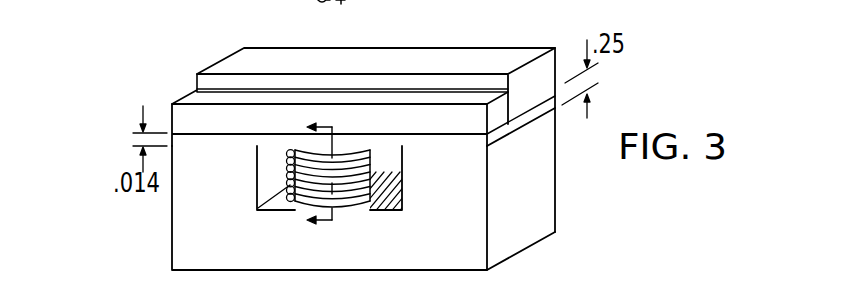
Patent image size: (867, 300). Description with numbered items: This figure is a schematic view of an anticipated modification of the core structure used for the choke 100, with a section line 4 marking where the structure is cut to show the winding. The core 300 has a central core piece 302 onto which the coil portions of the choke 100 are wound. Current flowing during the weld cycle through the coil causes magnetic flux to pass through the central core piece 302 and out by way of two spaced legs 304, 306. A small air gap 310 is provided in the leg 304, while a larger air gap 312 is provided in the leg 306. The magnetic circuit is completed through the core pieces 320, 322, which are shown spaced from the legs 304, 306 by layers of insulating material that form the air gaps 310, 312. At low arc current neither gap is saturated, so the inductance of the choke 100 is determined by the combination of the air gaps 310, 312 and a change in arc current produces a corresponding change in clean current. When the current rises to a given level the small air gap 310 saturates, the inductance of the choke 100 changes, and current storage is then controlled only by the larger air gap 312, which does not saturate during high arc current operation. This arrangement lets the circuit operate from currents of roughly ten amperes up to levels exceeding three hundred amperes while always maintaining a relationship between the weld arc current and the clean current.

The choke 100 is at (347, 211).
The core 300 is at (557, 203).
The central core piece 302 is at (290, 196).
The leg 304 is at (187, 236).
The leg 306 is at (542, 178).
The small air gap 310 is at (143, 117).
The larger air gap 312 is at (588, 108).
The core piece 320 is at (192, 96).
The core piece 322 is at (512, 53).
The section line for FIG. 4 is at (333, 184).